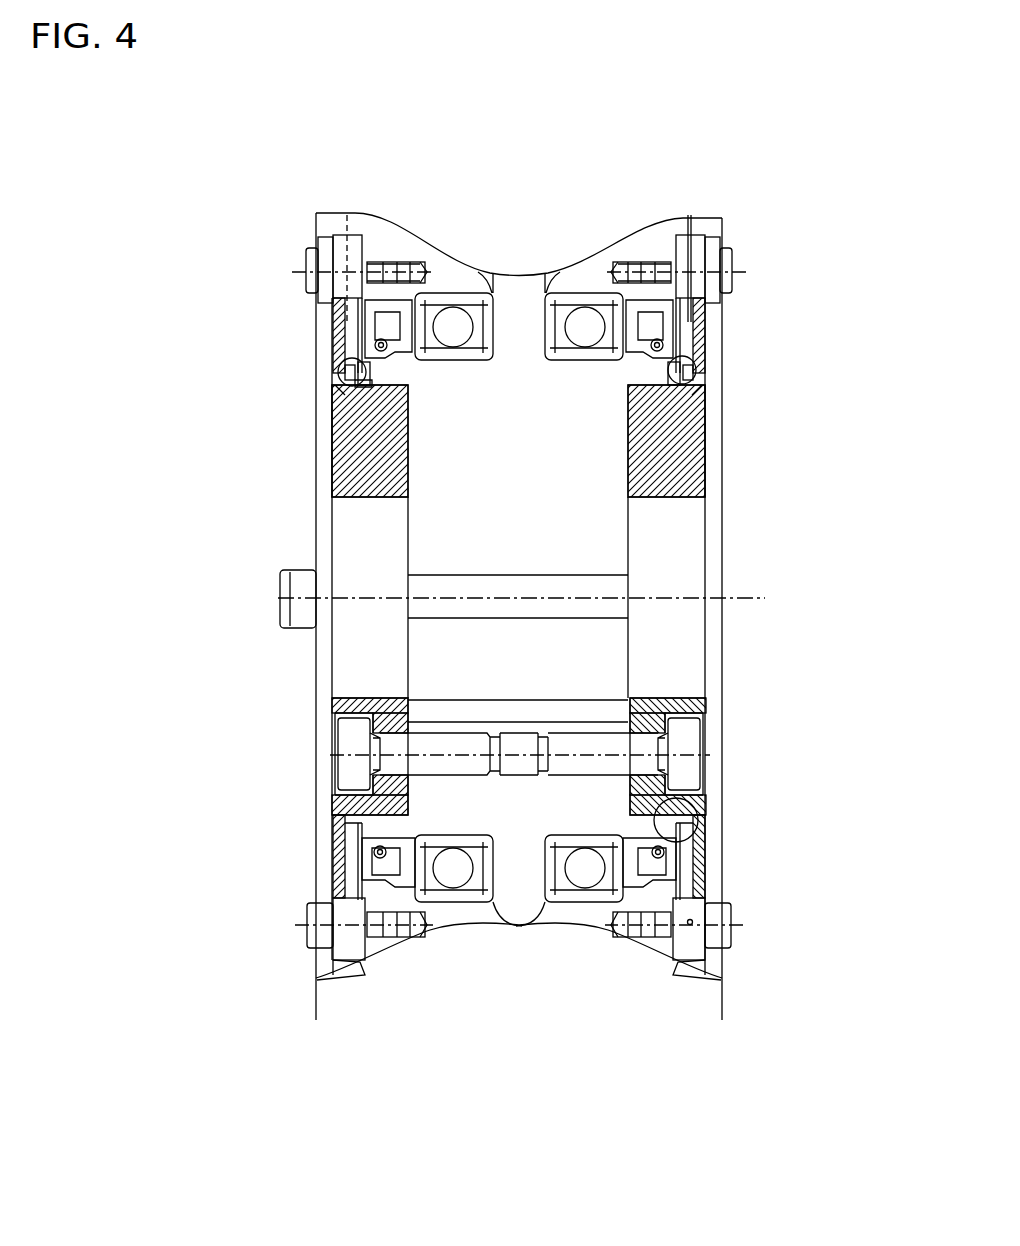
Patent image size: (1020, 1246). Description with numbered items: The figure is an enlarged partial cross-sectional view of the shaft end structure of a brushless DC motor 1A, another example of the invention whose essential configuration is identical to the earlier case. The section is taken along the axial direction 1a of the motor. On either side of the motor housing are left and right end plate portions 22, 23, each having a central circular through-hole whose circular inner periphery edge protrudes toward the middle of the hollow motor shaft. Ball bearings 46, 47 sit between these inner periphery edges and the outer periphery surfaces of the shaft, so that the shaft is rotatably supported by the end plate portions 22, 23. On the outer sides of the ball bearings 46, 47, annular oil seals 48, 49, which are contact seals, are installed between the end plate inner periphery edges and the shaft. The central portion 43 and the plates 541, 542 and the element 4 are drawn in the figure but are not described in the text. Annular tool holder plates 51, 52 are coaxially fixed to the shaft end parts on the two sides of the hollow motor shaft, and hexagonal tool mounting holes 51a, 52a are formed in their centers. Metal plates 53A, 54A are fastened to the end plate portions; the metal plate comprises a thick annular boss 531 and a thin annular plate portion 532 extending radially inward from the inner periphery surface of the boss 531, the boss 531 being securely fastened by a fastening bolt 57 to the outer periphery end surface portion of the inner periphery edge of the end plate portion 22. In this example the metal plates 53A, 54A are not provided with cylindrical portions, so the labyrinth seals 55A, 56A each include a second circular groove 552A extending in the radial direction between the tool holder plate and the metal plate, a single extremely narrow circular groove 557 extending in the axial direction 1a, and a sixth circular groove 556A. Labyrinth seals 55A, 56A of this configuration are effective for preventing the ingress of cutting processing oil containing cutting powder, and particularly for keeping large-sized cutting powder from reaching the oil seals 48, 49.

The brushless DC motor 1A is at (205, 220).
The axial direction 1a is at (358, 600).
The bearing assembly 4 is at (606, 374).
The end plate portion 22 is at (310, 860).
The end plate portion 23 is at (730, 768).
The shaft 43 is at (528, 564).
The ball bearing 46 is at (457, 880).
The ball bearing 47 is at (580, 880).
The annular oil seal 48 is at (390, 870).
The annular oil seal 49 is at (645, 880).
The tool holder plate 51 is at (345, 448).
The hexagonal tool mounting hole 51a is at (377, 597).
The tool holder plate 52 is at (688, 460).
The hexagonal tool mounting hole 52a is at (656, 597).
The metal plate 53A is at (343, 330).
The boss 531 is at (340, 290).
The annular plate portion 532 is at (356, 355).
The metal plate 54A is at (709, 332).
The right spacer body 541 is at (680, 285).
The right spacer flange 542 is at (690, 345).
The labyrinth seal 55A is at (336, 393).
The second circular groove 552A is at (345, 372).
The sixth circular groove 556A is at (374, 372).
The circular groove 557 is at (364, 380).
The labyrinth seal 56A is at (704, 384).
The fastening bolt 57 is at (318, 265).